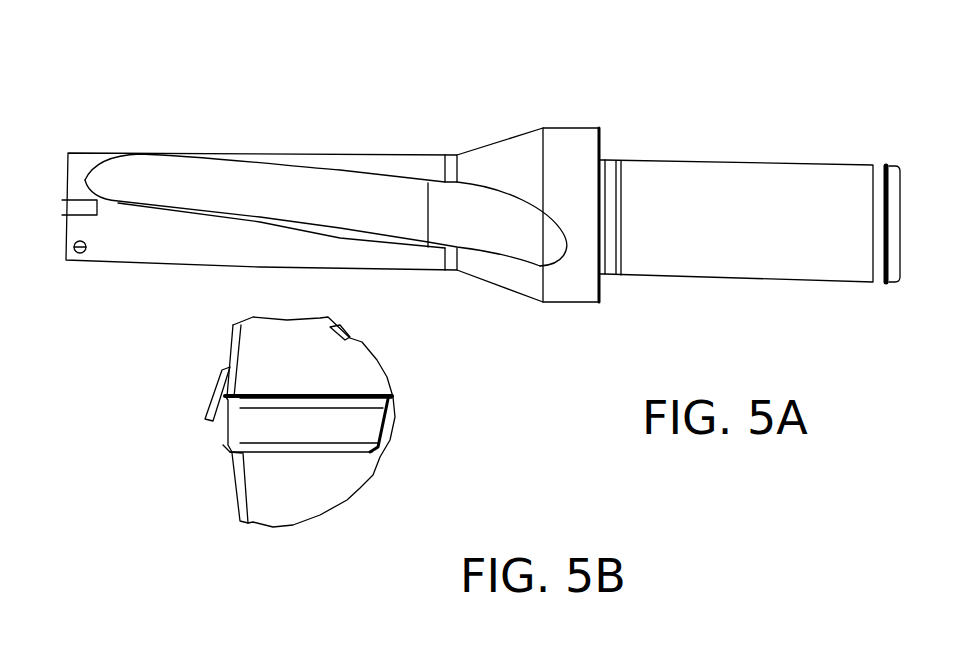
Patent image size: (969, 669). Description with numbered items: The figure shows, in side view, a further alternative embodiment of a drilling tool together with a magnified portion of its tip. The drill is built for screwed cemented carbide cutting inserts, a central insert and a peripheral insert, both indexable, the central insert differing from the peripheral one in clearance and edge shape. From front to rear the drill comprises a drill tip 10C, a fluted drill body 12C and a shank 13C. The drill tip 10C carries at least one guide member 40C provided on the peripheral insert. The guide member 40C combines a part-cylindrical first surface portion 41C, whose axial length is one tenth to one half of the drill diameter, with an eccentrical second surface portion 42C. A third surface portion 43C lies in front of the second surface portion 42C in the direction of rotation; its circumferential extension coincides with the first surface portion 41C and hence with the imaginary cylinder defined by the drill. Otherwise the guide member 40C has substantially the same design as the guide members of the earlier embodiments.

In FIG. 5A, the drill tip 10C is at (78, 137).
In FIG. 5A, the drill body 12C is at (432, 145).
In FIG. 5A, the shank 13C is at (723, 185).
In FIG. 5B, the guide member 40C is at (333, 407).
In FIG. 5B, the first surface portion 41C is at (226, 407).
In FIG. 5B, the second surface portion 42C is at (283, 403).
In FIG. 5B, the third surface portion 43C is at (365, 393).